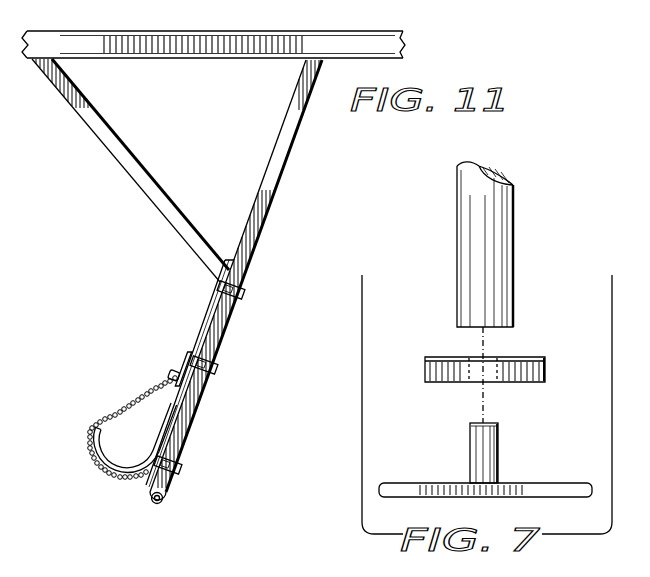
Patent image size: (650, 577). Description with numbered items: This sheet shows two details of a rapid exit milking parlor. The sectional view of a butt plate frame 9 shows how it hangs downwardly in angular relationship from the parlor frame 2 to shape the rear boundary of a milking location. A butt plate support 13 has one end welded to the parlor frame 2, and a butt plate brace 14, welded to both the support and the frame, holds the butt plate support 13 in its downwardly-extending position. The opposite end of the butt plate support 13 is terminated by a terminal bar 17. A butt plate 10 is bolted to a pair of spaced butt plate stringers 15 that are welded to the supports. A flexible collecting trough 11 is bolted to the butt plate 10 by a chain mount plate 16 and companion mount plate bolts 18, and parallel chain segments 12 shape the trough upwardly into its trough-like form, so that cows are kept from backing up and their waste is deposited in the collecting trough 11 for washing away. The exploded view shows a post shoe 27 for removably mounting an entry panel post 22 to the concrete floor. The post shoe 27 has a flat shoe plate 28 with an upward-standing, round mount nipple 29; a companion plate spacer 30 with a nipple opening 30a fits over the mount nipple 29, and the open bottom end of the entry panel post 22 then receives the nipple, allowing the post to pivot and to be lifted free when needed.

In FIG. 11, the parlor frame 2 is at (173, 45).
In FIG. 11, the butt plate frame 9 is at (188, 279).
In FIG. 11, the butt plate 10 is at (206, 312).
In FIG. 11, the collecting trough 11 is at (160, 438).
In FIG. 11, the chain segments 12 is at (119, 408).
In FIG. 11, the butt plate support 13 is at (273, 197).
In FIG. 11, the butt plate brace 14 is at (141, 178).
In FIG. 11, the butt plate stringers 15 is at (214, 348).
In FIG. 11, the chain mount plate 16 is at (185, 358).
In FIG. 11, the terminal bar 17 is at (168, 508).
In FIG. 11, the mount plate bolts 18 is at (169, 376).
In FIG. 7, the entry panel post 22 is at (513, 290).
In FIG. 7, the post shoe 27 is at (446, 478).
In FIG. 7, the shoe plate 28 is at (540, 498).
In FIG. 7, the mount nipple 29 is at (498, 460).
In FIG. 7, the plate spacer 30 is at (530, 357).
In FIG. 7, the nipple opening 30a is at (478, 357).